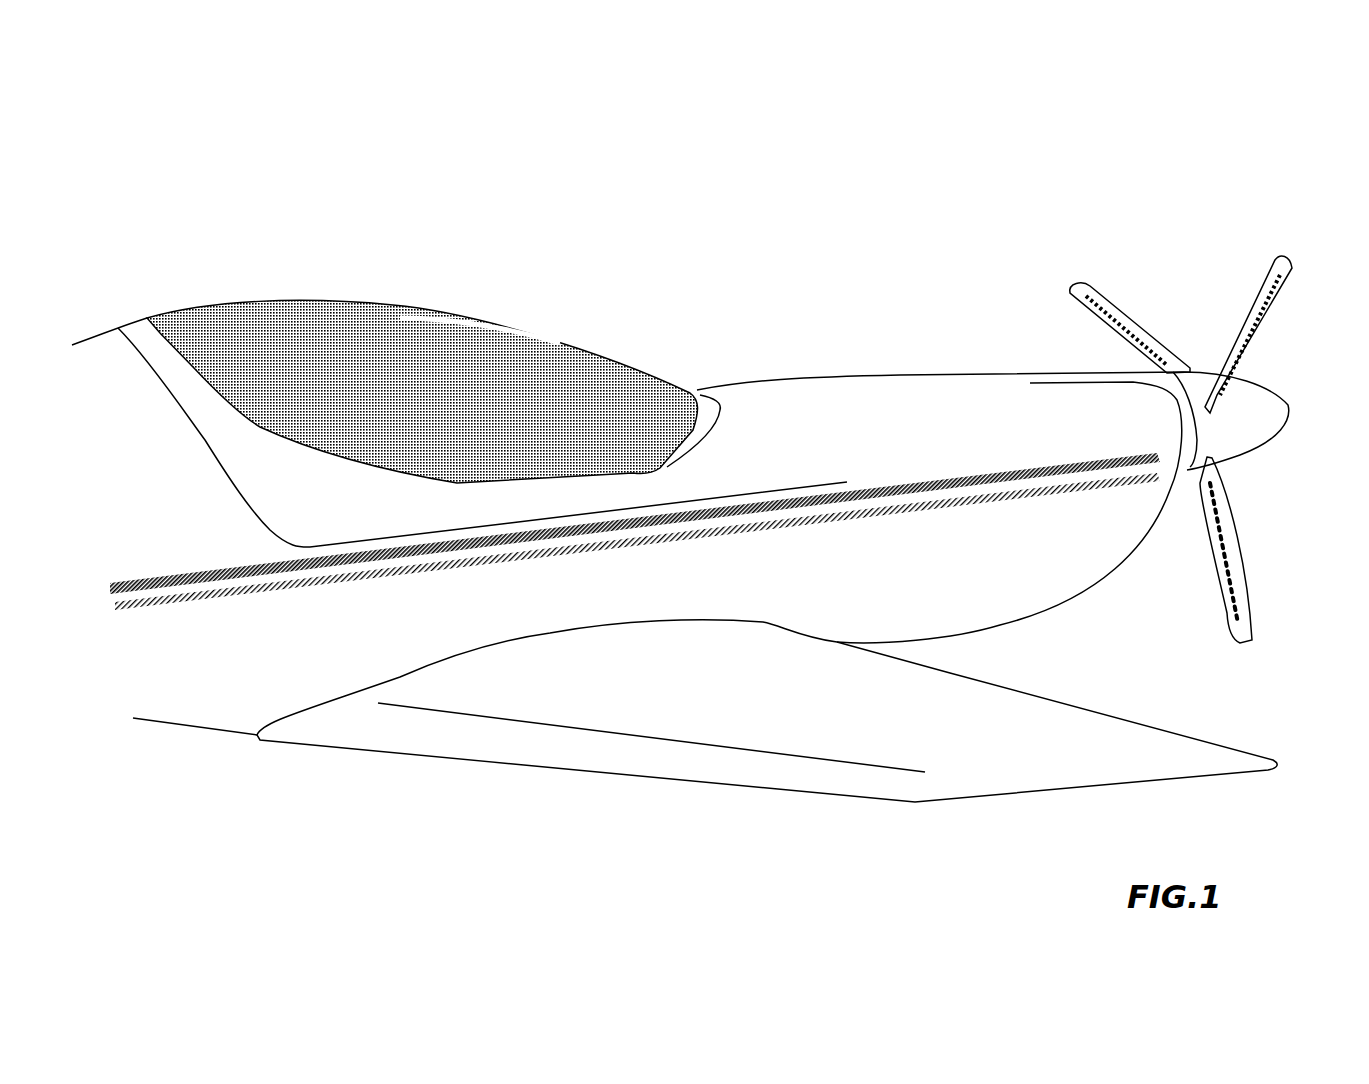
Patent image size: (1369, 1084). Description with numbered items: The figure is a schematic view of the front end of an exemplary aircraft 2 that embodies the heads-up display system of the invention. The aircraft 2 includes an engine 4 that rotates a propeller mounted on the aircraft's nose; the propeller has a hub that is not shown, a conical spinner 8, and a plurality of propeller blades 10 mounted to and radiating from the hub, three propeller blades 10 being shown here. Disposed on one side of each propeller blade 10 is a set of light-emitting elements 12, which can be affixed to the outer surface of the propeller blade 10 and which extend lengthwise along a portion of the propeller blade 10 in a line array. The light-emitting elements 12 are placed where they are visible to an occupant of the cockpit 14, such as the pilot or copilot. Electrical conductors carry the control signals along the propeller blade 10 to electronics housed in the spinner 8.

The aircraft 2 is at (650, 172).
The engine 4 is at (887, 390).
The conical spinner 8 is at (1265, 428).
The propeller blade 10 is at (1078, 293).
The light-emitting elements 12 is at (1118, 325).
The cockpit 14 is at (318, 320).